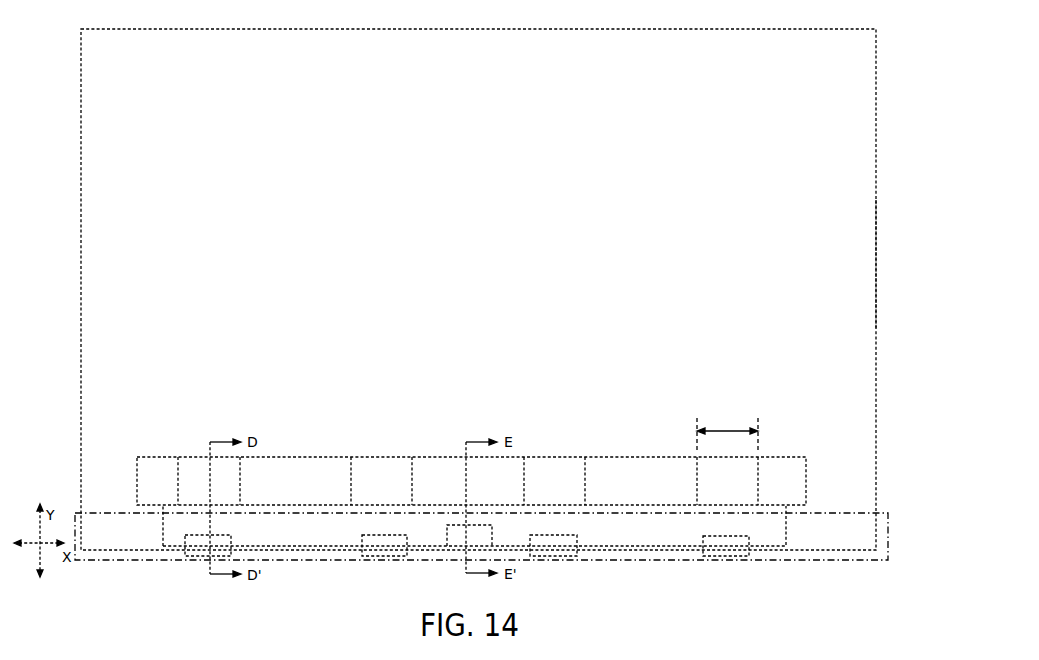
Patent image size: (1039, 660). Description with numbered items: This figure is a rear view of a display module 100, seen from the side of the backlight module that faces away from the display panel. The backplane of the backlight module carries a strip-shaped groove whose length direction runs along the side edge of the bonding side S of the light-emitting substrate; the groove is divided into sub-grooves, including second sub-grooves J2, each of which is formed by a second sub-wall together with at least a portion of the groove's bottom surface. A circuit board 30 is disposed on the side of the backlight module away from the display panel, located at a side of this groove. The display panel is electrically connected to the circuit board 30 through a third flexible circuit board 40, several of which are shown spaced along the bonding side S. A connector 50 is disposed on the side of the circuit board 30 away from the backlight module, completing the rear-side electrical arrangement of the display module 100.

The display module 100 is at (55, 21).
The second sub-groove J2 is at (727, 431).
The circuit board 30 is at (628, 533).
The third flexible circuit board 40 is at (722, 545).
The connector 50 is at (452, 535).
The bonding side S is at (890, 540).